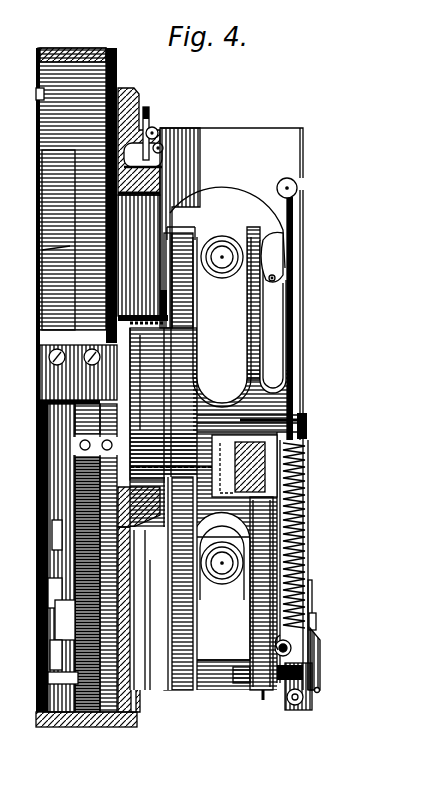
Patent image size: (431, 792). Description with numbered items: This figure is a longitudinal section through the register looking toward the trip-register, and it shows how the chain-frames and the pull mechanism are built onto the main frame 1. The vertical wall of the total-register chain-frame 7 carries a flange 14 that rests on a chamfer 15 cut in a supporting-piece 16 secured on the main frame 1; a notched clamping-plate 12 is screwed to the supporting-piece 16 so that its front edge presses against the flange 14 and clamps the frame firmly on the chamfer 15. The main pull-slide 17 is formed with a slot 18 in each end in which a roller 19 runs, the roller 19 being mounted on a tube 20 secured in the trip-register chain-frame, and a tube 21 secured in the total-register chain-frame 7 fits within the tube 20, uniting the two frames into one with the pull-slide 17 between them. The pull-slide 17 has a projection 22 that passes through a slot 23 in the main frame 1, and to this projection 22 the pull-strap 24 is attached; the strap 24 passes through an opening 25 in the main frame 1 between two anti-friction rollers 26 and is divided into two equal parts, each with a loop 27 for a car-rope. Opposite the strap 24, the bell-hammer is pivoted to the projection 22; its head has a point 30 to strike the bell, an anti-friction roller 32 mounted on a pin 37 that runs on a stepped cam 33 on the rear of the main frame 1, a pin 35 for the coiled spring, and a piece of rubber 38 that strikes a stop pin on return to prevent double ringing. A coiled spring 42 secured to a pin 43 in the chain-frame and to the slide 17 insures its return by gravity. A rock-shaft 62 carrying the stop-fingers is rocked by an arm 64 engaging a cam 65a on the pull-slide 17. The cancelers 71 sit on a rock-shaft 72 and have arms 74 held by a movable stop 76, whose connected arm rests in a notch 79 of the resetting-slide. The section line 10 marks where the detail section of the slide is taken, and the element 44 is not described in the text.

The main frame 1 is at (100, 745).
The total-register chain-frame 7 is at (288, 127).
The section line 10 is at (143, 361).
The clamping-plate 12 is at (155, 127).
The flange 14 is at (143, 104).
The chamfer 15 is at (152, 163).
The supporting-piece 16 is at (147, 106).
The main pull-slide 17 is at (297, 423).
The slot 18 is at (256, 726).
The roller 19 is at (240, 240).
The tube 20 is at (240, 257).
The tube 21 is at (224, 250).
The projection 22 is at (105, 376).
The slot 23 is at (68, 252).
The pull-strap 24 is at (62, 248).
The opening 25 is at (36, 94).
The anti-friction roller 26 is at (72, 189).
The loop 27 is at (75, 584).
The point 30 is at (53, 652).
The anti-friction roller 32 is at (42, 713).
The stepped cam 33 is at (60, 613).
The pin 35 is at (48, 582).
The pin 37 is at (56, 714).
The rubber 38 is at (42, 678).
The coiled spring 42 is at (310, 596).
The pin 43 is at (291, 649).
The member 44 is at (58, 535).
The rock-shaft 62 is at (292, 186).
The arm 64 is at (288, 268).
The cam 65a is at (275, 281).
The canceler 71 is at (306, 578).
The rock-shaft 72 is at (288, 706).
The arm 74 is at (316, 623).
The movable stop 76 is at (321, 672).
The notch 79 is at (320, 692).